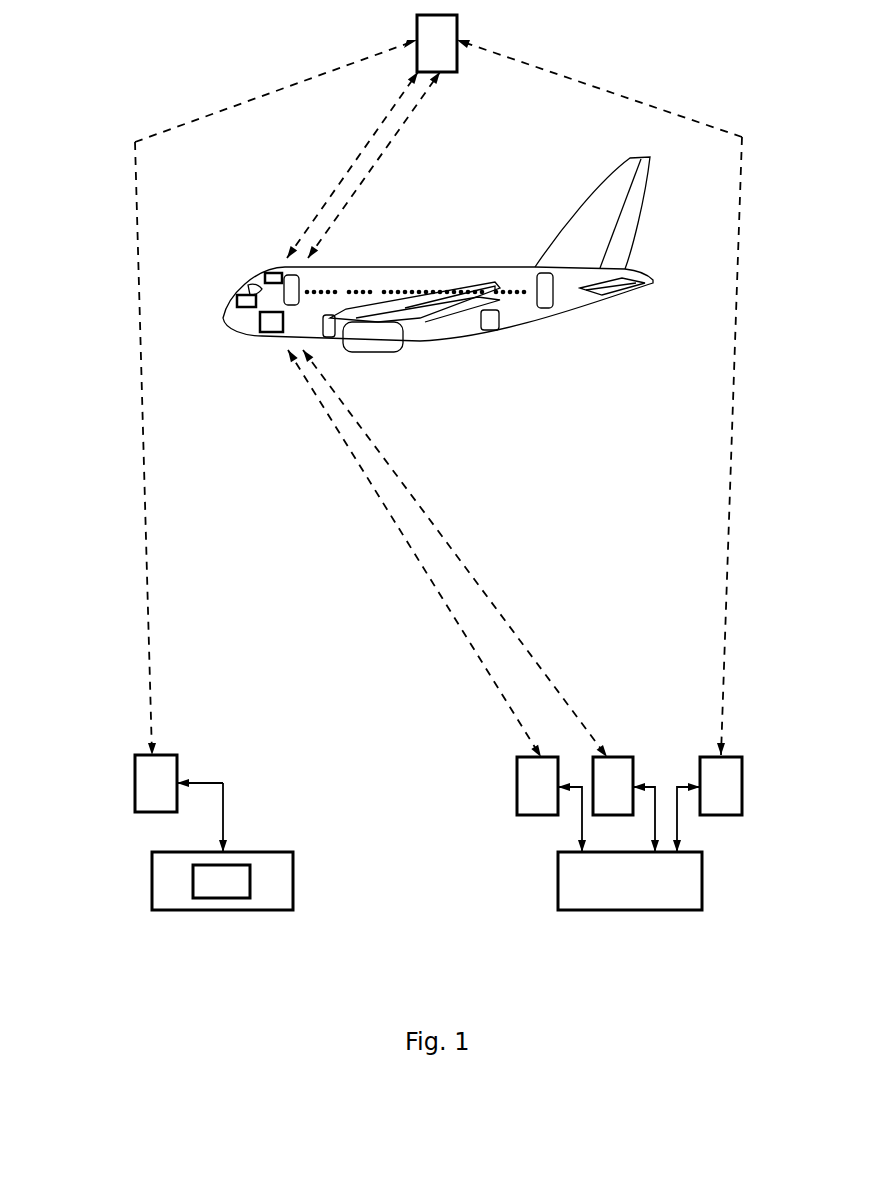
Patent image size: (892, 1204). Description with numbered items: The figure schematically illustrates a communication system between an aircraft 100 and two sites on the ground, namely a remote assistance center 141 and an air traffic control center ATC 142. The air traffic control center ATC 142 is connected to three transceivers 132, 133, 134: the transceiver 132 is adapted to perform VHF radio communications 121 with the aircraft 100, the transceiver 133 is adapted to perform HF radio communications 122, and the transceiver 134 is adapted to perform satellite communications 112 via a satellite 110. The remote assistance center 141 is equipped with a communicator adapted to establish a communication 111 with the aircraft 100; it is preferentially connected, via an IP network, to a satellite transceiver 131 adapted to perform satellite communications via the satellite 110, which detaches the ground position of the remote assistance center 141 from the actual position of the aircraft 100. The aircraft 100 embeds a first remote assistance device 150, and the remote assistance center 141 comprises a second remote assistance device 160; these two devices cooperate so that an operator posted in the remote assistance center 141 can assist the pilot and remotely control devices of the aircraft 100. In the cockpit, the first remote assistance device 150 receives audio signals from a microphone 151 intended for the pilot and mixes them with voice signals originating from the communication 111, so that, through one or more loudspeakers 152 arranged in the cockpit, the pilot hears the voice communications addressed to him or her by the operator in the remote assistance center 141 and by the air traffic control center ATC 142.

The aircraft 100 is at (374, 354).
The satellite 110 is at (412, 30).
The communication 111 is at (361, 152).
The satellite communications 112 is at (388, 150).
The VHF radio communications 121 is at (439, 599).
The HF radio communications 122 is at (494, 599).
The satellite transceiver 131 is at (178, 756).
The transceiver 132 is at (514, 760).
The transceiver 133 is at (633, 757).
The transceiver 134 is at (742, 757).
The remote assistance center 141 is at (293, 852).
The air traffic control center ATC 142 is at (703, 852).
The first remote assistance device 150 is at (262, 335).
The microphone 151 is at (237, 300).
The loudspeakers 152 is at (265, 276).
The second remote assistance device 160 is at (224, 900).